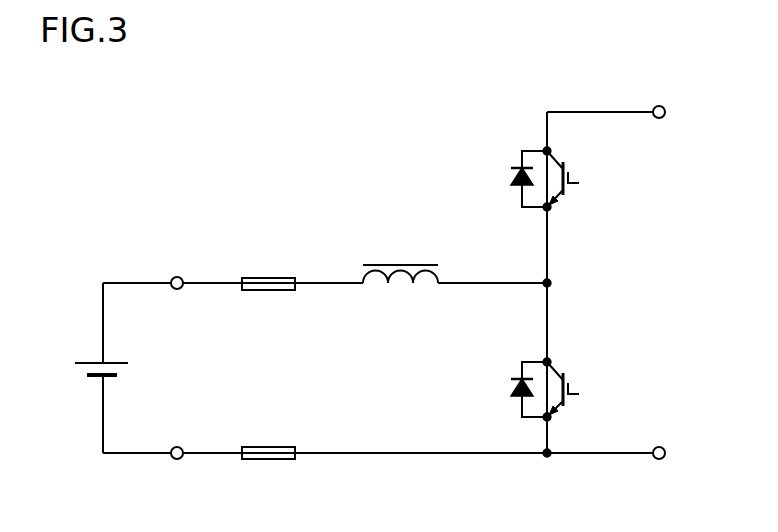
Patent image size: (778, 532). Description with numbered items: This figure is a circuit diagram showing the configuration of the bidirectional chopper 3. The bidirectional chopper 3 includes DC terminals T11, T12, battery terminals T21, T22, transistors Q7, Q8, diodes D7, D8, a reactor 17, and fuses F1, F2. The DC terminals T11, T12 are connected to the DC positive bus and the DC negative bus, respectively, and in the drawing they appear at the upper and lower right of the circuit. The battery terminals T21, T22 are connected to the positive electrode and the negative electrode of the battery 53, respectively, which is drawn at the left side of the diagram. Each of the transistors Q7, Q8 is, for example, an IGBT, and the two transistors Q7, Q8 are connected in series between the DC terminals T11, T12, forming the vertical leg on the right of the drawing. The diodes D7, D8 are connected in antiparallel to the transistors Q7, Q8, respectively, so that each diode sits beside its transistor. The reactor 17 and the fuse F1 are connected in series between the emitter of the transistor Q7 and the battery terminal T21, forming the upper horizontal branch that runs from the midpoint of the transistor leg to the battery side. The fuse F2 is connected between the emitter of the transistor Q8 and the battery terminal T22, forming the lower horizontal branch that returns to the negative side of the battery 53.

The bidirectional chopper 3 is at (136, 93).
The DC terminal T11 is at (662, 106).
The DC terminal T12 is at (659, 460).
The battery terminal T21 is at (177, 276).
The battery terminal T22 is at (177, 460).
The fuse F1 is at (268, 277).
The fuse F2 is at (268, 460).
The reactor 17 is at (402, 292).
The battery 53 is at (92, 362).
The diode D7 is at (507, 181).
The transistor Q7 is at (583, 176).
The diode D8 is at (507, 392).
The transistor Q8 is at (583, 388).